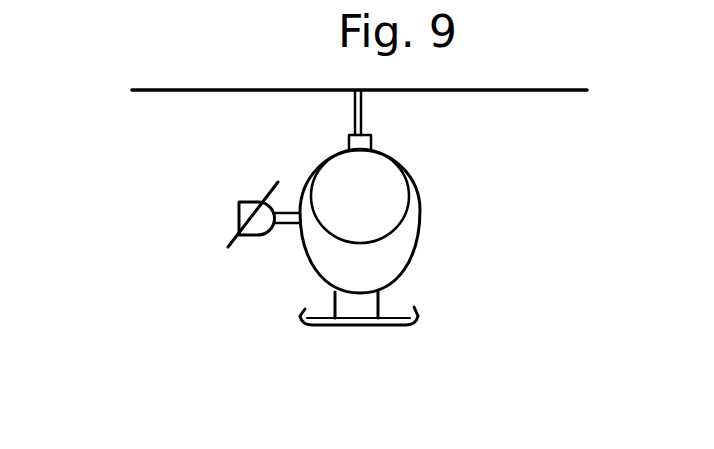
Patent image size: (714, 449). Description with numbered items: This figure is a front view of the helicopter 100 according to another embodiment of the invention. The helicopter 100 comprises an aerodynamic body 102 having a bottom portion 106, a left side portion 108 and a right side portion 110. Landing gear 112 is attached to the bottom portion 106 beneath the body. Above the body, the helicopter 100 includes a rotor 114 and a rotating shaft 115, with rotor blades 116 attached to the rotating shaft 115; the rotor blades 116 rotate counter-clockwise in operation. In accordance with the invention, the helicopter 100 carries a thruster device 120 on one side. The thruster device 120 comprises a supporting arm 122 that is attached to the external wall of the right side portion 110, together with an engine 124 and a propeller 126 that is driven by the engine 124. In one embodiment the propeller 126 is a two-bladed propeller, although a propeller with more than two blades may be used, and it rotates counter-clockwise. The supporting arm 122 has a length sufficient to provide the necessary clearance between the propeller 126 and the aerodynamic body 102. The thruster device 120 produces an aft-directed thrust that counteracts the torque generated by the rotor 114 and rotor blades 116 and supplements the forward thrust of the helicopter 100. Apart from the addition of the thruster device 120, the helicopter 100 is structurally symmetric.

The helicopter 100 is at (124, 153).
The aerodynamic body 102 is at (403, 277).
The bottom portion 106 is at (324, 295).
The left side portion 108 is at (420, 207).
The right side portion 110 is at (310, 182).
The landing gear 112 is at (403, 326).
The rotor 114 is at (372, 142).
The rotating shaft 115 is at (354, 110).
The rotor blades 116 is at (528, 91).
The thruster device 120 is at (233, 170).
The supporting arm 122 is at (285, 231).
The engine 124 is at (238, 213).
The propeller 126 is at (237, 245).